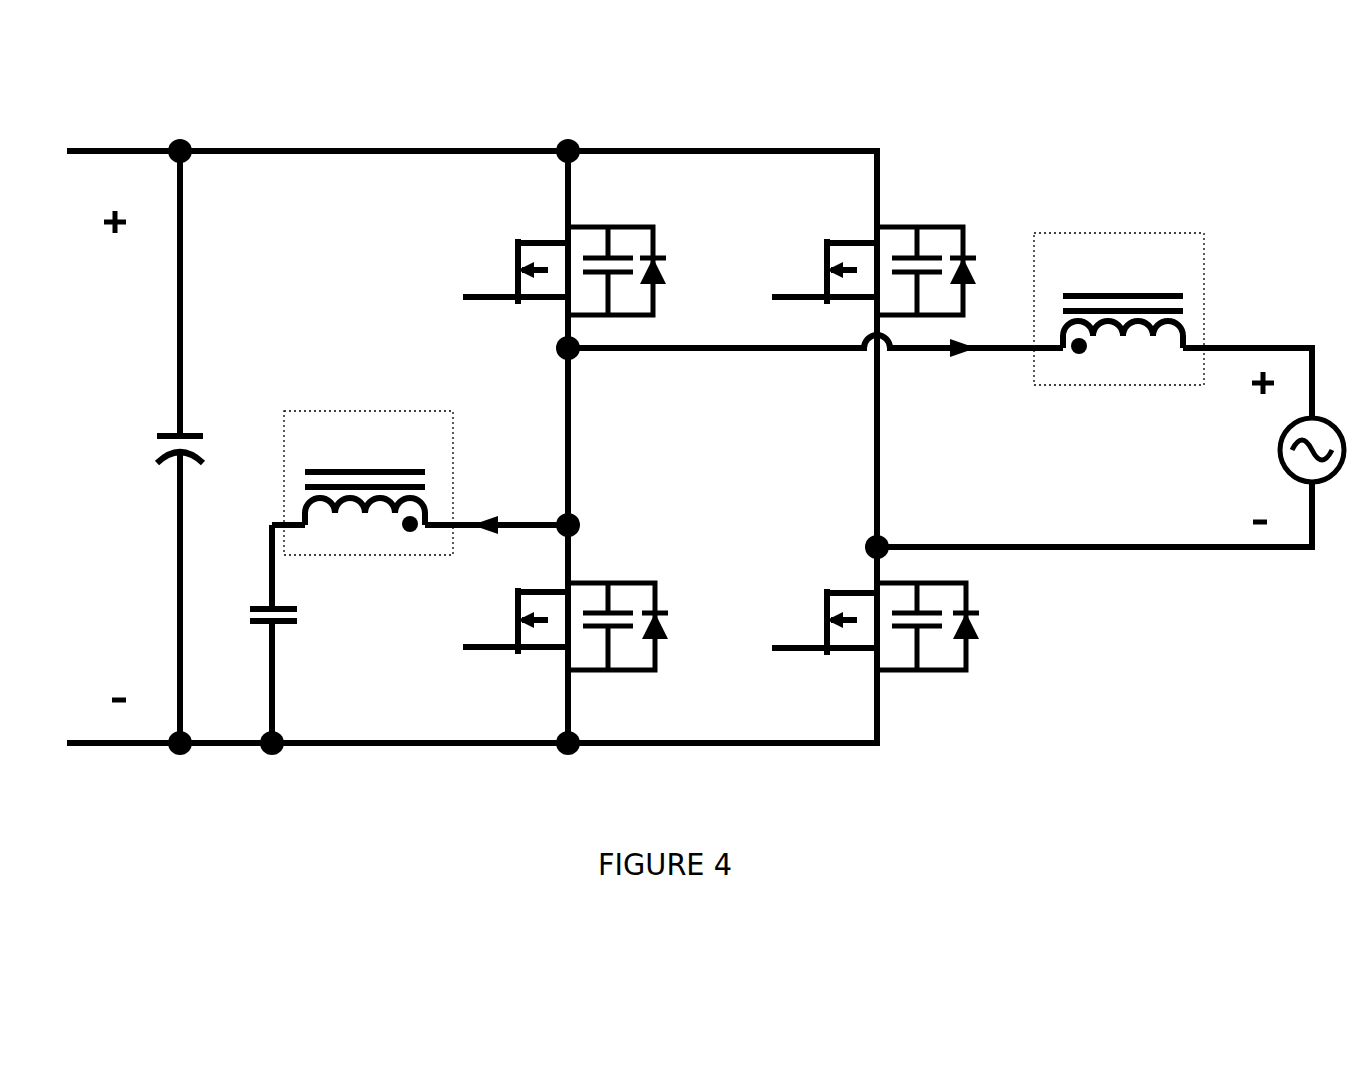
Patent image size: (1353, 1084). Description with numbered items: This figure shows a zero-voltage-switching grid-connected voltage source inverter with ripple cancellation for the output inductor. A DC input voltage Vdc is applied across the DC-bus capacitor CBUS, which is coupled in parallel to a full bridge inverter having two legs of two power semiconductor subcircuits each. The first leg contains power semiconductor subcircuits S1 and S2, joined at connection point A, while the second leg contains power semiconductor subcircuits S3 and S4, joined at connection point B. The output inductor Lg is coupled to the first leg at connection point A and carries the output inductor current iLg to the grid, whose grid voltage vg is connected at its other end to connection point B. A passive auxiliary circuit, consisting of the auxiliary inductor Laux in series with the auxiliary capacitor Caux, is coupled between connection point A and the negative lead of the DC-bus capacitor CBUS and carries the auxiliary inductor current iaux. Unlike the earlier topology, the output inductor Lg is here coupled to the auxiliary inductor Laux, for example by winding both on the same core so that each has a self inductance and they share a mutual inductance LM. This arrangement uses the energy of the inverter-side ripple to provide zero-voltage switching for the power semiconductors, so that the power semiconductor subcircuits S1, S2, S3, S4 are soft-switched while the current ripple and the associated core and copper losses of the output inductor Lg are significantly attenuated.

The input voltage of the inverter Vdc is at (116, 455).
The DC-bus capacitor CBUS is at (226, 425).
The power semiconductor subcircuit S1 is at (555, 258).
The power semiconductor subcircuit S2 is at (556, 620).
The power semiconductor subcircuit S3 is at (866, 258).
The power semiconductor subcircuit S4 is at (868, 620).
The connection point A is at (596, 382).
The connection point B is at (845, 549).
The auxiliary inductor Laux is at (368, 483).
The auxiliary inductor current iaux is at (505, 502).
The auxiliary capacitor Caux is at (325, 601).
The output inductor Lg is at (1119, 309).
The output inductor current iLg is at (962, 380).
The grid voltage vg is at (1283, 447).
The mutual inductance LM is at (483, 458).